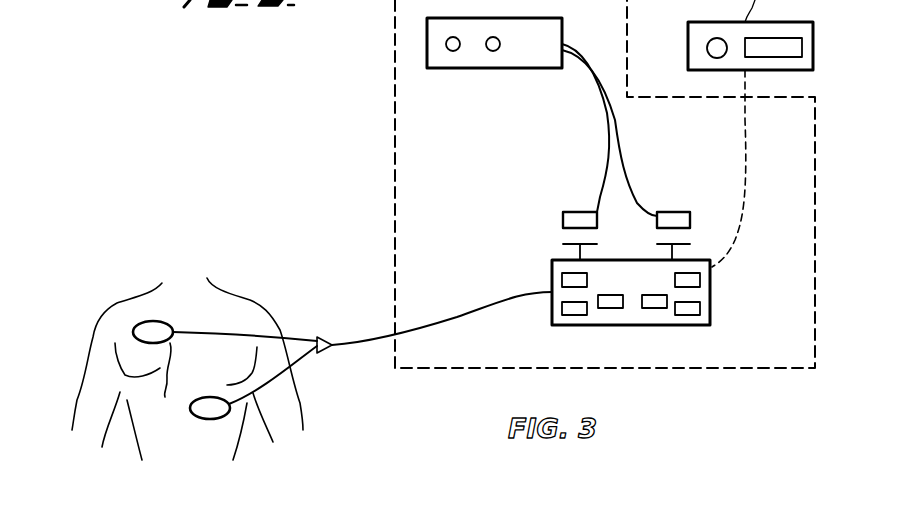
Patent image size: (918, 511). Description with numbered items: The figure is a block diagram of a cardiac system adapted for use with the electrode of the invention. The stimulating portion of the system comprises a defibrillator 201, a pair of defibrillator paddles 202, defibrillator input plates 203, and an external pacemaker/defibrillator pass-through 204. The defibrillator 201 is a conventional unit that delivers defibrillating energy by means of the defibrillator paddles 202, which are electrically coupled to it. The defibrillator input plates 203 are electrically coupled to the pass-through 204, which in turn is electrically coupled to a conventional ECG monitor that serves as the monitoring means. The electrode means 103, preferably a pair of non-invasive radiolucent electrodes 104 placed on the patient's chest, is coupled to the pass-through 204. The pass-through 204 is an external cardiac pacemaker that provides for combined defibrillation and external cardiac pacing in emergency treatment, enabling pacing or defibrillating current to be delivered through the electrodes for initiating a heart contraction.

The electrode means 103 is at (322, 353).
The electrodes 104 is at (200, 397).
The defibrillator 201 is at (468, 68).
The defibrillator paddles 202 is at (618, 157).
The defibrillator input plates 203 is at (568, 244).
The external pacemaker/defibrillator pass-through 204 is at (710, 310).